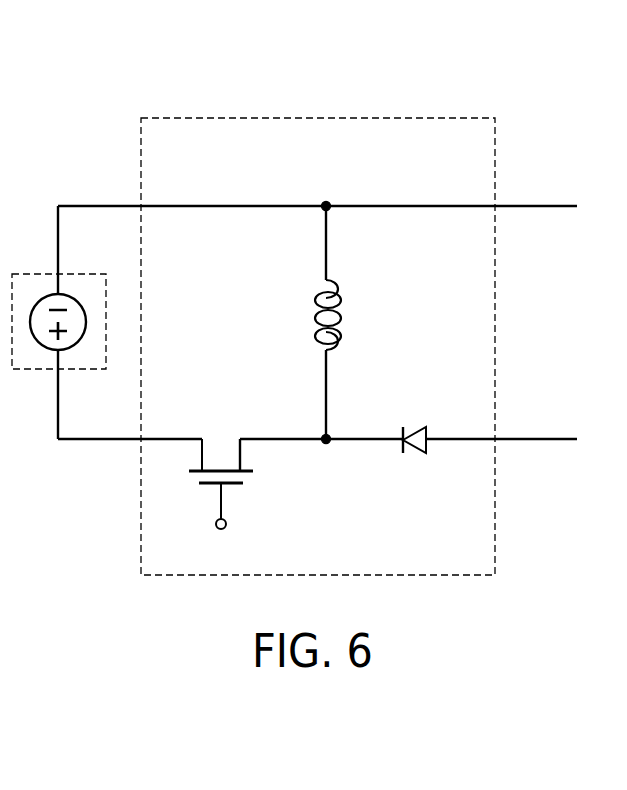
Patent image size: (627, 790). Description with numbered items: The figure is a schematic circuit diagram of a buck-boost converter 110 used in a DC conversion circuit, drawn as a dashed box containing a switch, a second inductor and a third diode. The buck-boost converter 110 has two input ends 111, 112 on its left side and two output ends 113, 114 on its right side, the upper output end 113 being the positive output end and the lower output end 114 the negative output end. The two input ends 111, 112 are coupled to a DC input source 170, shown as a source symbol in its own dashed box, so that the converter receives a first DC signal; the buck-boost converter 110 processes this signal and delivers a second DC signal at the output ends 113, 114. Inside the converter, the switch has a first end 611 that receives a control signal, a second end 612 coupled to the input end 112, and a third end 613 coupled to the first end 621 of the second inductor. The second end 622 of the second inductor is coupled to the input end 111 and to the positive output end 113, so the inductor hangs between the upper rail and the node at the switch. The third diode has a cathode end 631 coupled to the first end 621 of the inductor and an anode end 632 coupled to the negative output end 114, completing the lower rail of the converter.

The buck-boost converter 110 is at (361, 117).
The input end 111 is at (113, 204).
The input end 112 is at (113, 441).
The output end 113 is at (527, 204).
The output end 114 is at (527, 442).
The DC input source 170 is at (32, 272).
The first end of the switch 611 is at (222, 501).
The second end of the switch 612 is at (181, 437).
The third end of the switch 613 is at (267, 437).
The first end of the second inductor 621 is at (327, 362).
The second end of the second inductor 622 is at (327, 268).
The cathode end of the third diode 631 is at (385, 442).
The anode end of the third diode 632 is at (447, 442).